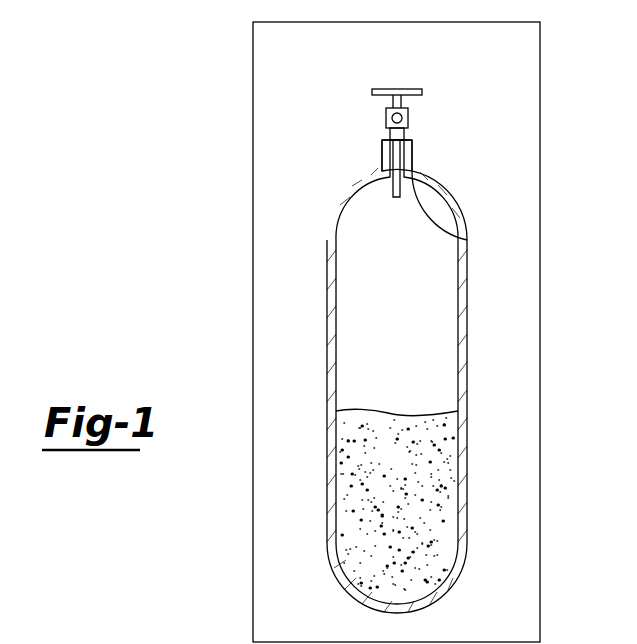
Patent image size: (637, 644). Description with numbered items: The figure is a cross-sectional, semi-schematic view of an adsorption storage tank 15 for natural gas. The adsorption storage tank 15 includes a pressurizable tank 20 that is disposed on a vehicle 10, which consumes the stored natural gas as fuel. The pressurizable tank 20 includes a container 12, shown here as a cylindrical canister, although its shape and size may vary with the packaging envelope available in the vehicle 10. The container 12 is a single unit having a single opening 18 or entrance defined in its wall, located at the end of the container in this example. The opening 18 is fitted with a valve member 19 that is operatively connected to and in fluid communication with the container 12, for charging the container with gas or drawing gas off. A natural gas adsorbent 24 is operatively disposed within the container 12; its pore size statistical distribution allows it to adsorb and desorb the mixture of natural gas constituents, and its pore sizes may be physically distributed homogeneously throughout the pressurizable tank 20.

The vehicle 10 is at (238, 102).
The container 12 is at (469, 260).
The adsorption storage tank 15 is at (350, 185).
The opening 18 is at (396, 148).
The valve member 19 is at (398, 88).
The pressurizable tank 20 is at (457, 163).
The natural gas adsorbent 24 is at (447, 476).